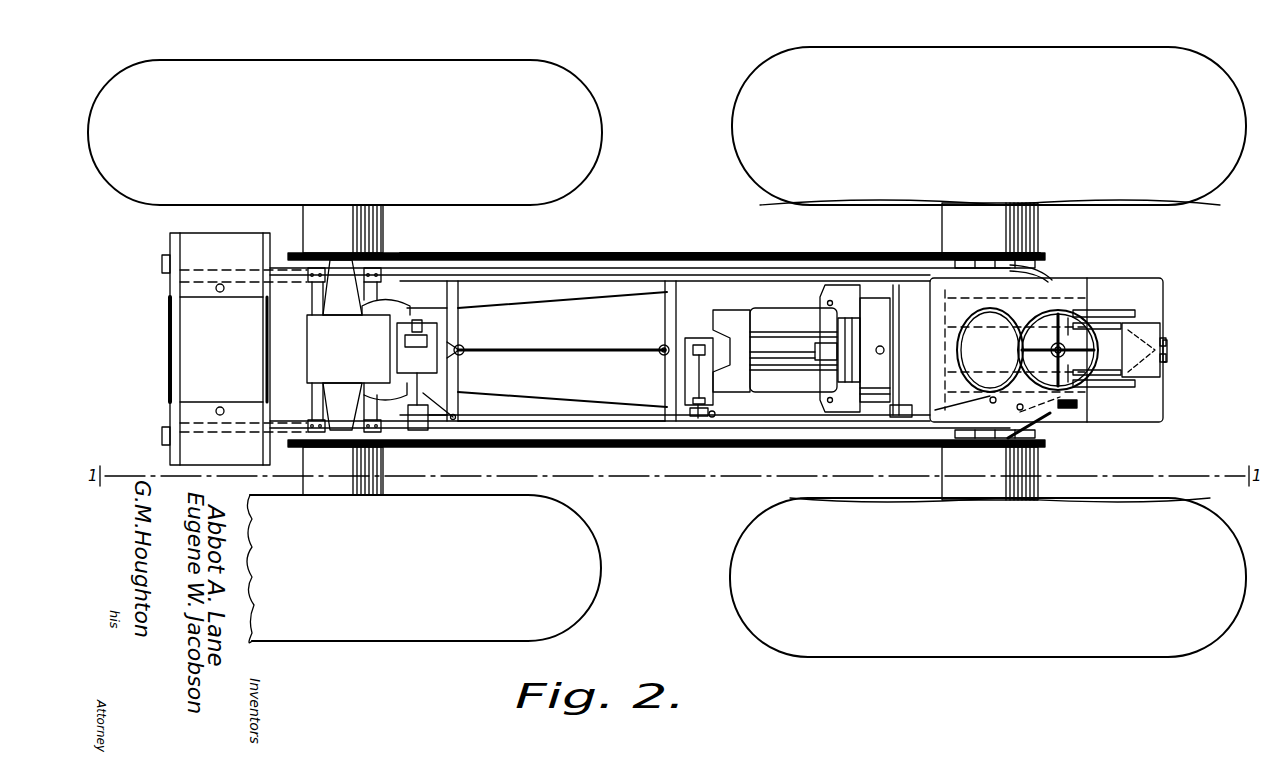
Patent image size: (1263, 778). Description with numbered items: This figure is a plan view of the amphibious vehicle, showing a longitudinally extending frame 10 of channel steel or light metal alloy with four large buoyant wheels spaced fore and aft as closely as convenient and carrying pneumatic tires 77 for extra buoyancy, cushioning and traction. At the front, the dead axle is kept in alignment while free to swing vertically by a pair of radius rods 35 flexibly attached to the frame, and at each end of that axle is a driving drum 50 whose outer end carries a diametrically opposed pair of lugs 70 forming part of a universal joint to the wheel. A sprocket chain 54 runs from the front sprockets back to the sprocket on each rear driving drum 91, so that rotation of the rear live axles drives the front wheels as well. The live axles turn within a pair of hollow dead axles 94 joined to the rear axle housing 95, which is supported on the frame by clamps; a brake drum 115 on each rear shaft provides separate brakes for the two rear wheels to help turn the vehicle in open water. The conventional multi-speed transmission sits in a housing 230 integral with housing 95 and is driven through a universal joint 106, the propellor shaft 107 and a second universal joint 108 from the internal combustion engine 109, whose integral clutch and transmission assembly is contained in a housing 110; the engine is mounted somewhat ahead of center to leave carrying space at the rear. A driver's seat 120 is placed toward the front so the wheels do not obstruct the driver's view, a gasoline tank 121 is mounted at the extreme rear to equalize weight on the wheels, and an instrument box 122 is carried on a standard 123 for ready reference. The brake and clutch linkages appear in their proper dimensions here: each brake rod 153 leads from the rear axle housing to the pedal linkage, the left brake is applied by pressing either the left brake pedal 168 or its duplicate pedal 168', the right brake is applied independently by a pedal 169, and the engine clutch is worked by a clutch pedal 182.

The frame 10 is at (652, 276).
The radius rods 35 is at (1040, 282).
The driving drum 50 is at (1039, 228).
The sprocket chain 54 is at (545, 254).
The lugs 70 is at (617, 424).
The pneumatic tires 77 is at (736, 130).
The driving drum 91 is at (384, 228).
The hollow dead axles 94 is at (356, 265).
The rear axle housing 95 is at (313, 360).
The universal joint 106 is at (465, 348).
The propellor shaft 107 is at (630, 350).
The second universal joint 108 is at (660, 353).
The internal combustion engine 109 is at (803, 312).
The housing 110 is at (725, 334).
The brake drum 115 is at (393, 312).
The driver's seat 120 is at (1068, 294).
The gasoline tank 121 is at (186, 292).
The instrument box 122 is at (1158, 331).
The standard 123 is at (1165, 350).
The rod 153 is at (494, 304).
The left brake pedal 168 is at (1139, 310).
The duplicate brake pedal 168' is at (1112, 391).
The pedal 169 is at (1137, 384).
The clutch pedal 182 is at (1130, 311).
The housing 230 is at (437, 360).